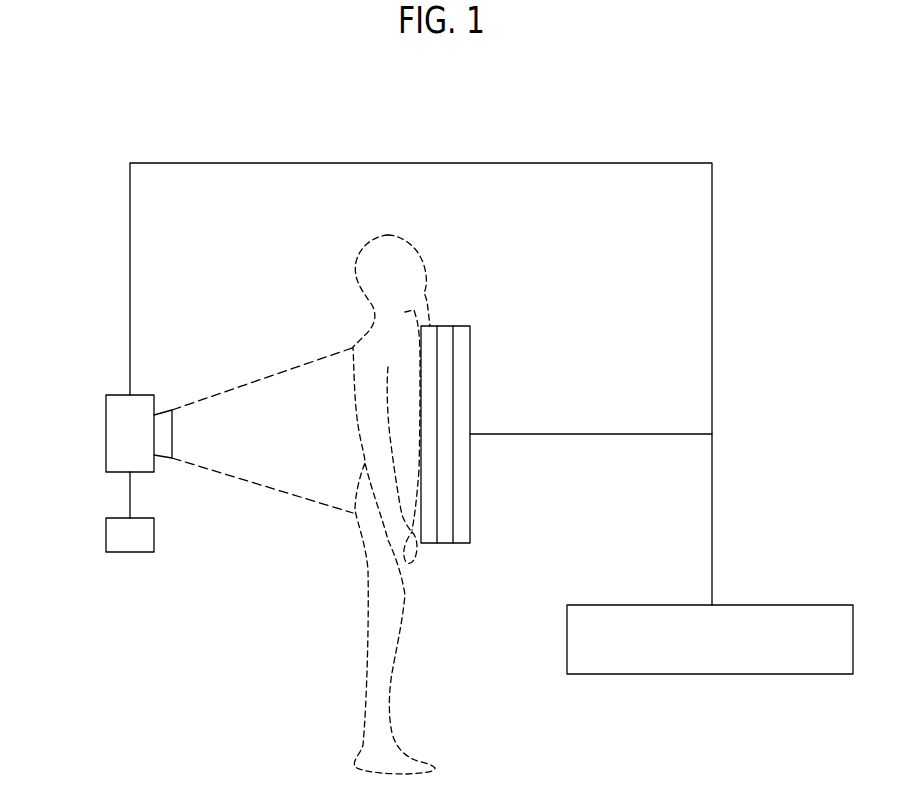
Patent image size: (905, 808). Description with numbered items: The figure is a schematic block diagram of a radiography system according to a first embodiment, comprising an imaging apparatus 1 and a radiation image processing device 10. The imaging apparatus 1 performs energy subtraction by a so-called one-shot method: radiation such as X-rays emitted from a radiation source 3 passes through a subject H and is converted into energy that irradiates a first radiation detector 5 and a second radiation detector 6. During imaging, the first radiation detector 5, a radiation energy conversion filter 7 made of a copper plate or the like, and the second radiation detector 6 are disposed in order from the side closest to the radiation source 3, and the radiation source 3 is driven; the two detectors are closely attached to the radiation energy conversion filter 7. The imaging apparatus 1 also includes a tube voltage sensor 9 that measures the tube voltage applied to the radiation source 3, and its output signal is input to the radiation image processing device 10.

The imaging apparatus 1 is at (173, 128).
The radiation source 3 is at (106, 428).
The first radiation detector 5 is at (432, 326).
The second radiation detector 6 is at (466, 326).
The radiation energy conversion filter 7 is at (443, 543).
The tube voltage sensor 9 is at (106, 530).
The radiation image processing device 10 is at (818, 605).
The subject H is at (367, 241).